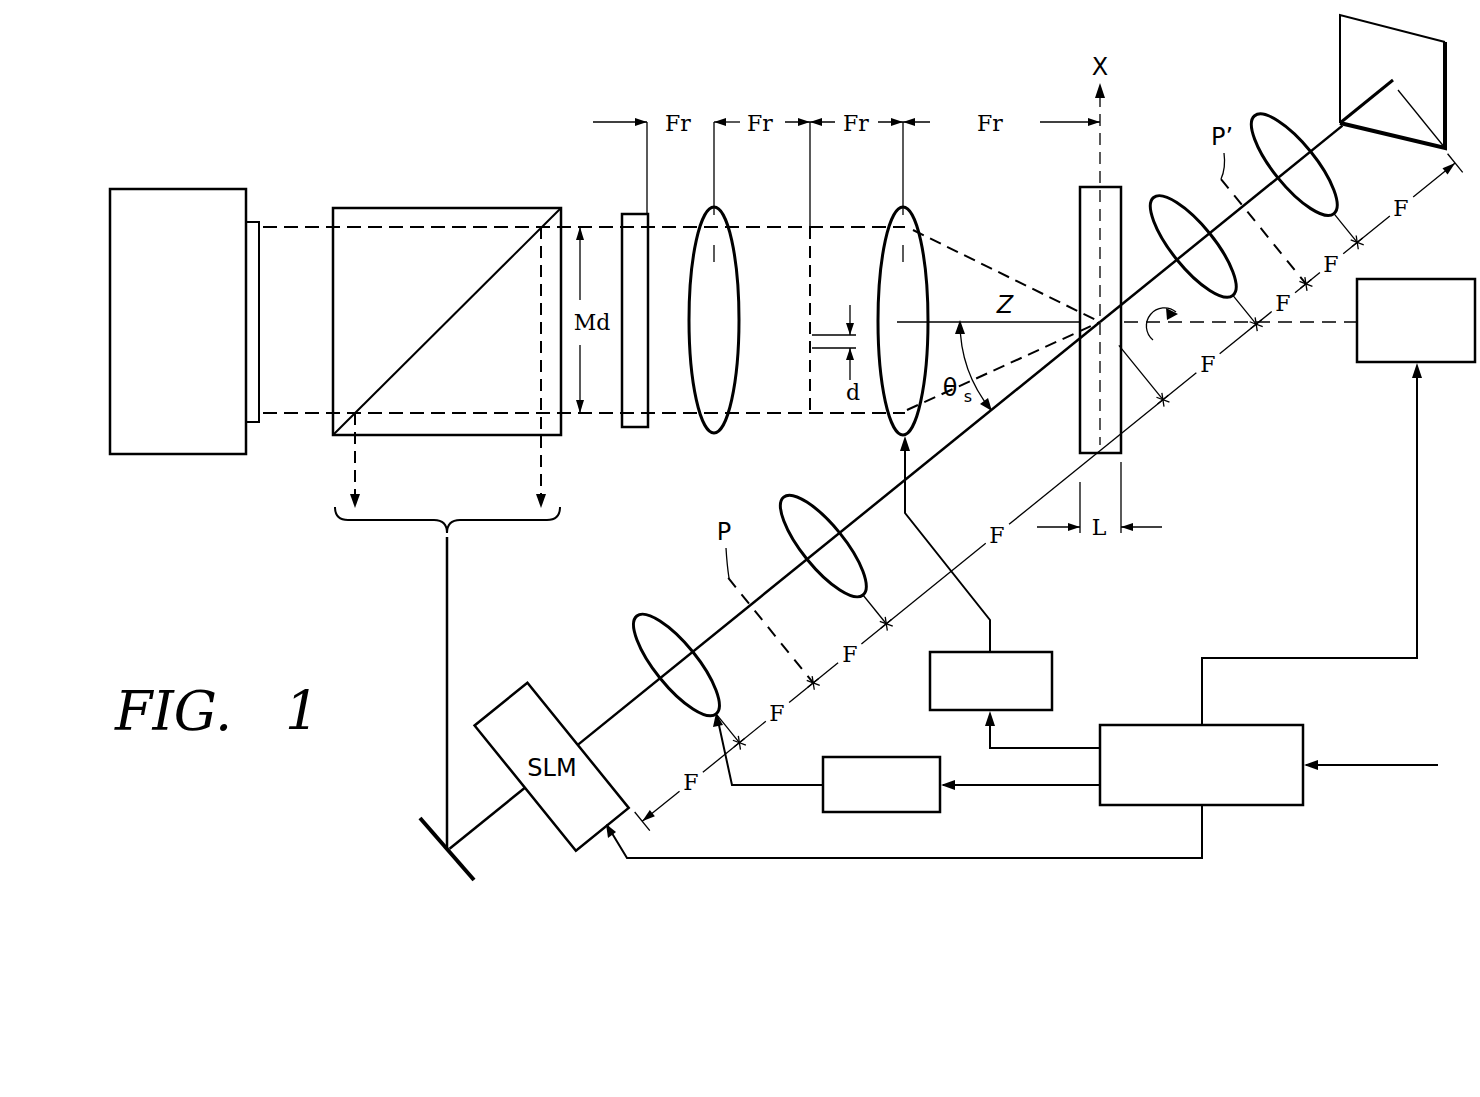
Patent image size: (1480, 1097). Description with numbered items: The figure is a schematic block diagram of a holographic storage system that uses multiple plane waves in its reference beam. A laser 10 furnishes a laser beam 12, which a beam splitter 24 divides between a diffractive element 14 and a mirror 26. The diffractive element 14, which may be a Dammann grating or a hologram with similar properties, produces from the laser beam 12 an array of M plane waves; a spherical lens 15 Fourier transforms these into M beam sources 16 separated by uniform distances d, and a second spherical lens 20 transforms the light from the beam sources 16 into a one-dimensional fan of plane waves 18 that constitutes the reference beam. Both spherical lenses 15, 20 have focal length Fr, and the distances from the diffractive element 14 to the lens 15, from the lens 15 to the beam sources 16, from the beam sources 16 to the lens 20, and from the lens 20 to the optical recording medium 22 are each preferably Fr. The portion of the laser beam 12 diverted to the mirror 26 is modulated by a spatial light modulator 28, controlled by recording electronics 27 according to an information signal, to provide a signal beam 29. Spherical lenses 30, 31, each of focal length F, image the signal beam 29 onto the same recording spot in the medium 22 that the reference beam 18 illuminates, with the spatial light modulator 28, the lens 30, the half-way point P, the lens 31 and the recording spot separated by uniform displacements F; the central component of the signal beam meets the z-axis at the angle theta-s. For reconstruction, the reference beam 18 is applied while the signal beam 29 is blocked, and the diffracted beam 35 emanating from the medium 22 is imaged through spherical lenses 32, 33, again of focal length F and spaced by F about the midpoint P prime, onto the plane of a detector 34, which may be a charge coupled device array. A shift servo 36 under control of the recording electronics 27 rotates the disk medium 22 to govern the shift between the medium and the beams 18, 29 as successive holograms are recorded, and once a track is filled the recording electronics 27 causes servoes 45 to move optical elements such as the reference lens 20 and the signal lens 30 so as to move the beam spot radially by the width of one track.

The laser 10 is at (180, 197).
The laser beam 12 is at (291, 227).
The diffractive element 14 is at (623, 214).
The spherical lens 15 is at (728, 218).
The beam sources 16 is at (812, 252).
The fan of plane waves 18 is at (1005, 275).
The spherical lens 20 is at (920, 228).
The optical recording medium 22 is at (1080, 187).
The beam splitter 24 is at (404, 208).
The mirror 26 is at (422, 826).
The recording electronics 27 is at (1140, 725).
The spatial light modulator 28 is at (552, 767).
The signal beam 29 is at (775, 585).
The spherical lens 30 is at (687, 679).
The spherical lens 31 is at (834, 560).
The spherical lens 32 is at (1305, 178).
The spherical lens 33 is at (1204, 260).
The detector 34 is at (1340, 30).
The diffracted beam 35 is at (1221, 224).
The servo 36 is at (1385, 364).
The servoes 45 is at (1043, 652).